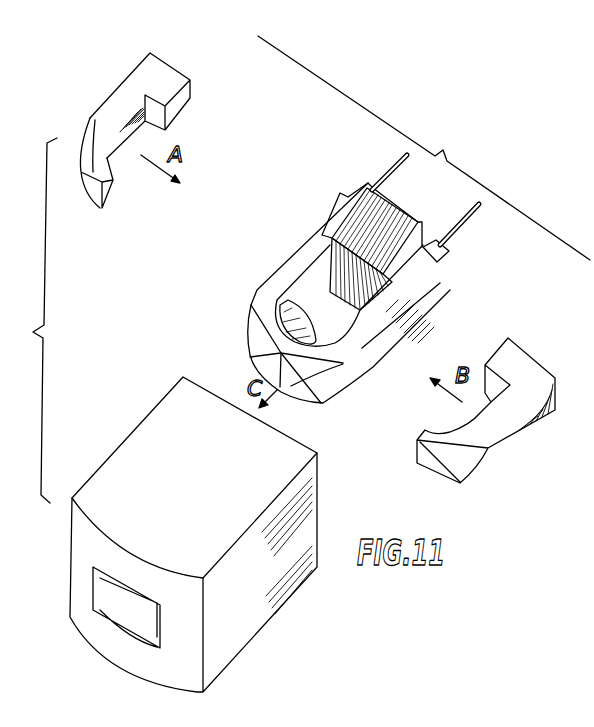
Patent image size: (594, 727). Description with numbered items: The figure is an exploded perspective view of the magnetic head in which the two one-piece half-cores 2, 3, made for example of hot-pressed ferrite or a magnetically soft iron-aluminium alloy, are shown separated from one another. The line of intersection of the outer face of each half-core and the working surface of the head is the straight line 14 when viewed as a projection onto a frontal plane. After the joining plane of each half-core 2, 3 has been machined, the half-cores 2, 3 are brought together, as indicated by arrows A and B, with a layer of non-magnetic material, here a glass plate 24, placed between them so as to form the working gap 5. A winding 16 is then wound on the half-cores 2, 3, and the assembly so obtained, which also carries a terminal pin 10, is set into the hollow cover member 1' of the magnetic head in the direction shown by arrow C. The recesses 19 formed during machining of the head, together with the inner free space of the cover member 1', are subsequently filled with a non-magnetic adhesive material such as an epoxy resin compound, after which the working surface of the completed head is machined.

The hollow cover member 1' is at (193, 534).
The half-core 2 is at (117, 111).
The half-core 3 is at (507, 438).
The working gap 5 is at (250, 363).
The terminal pin 10 is at (477, 213).
The straight line 14 is at (352, 388).
The winding 16 is at (403, 213).
The recess 19 is at (322, 402).
The glass plate 24 is at (280, 295).